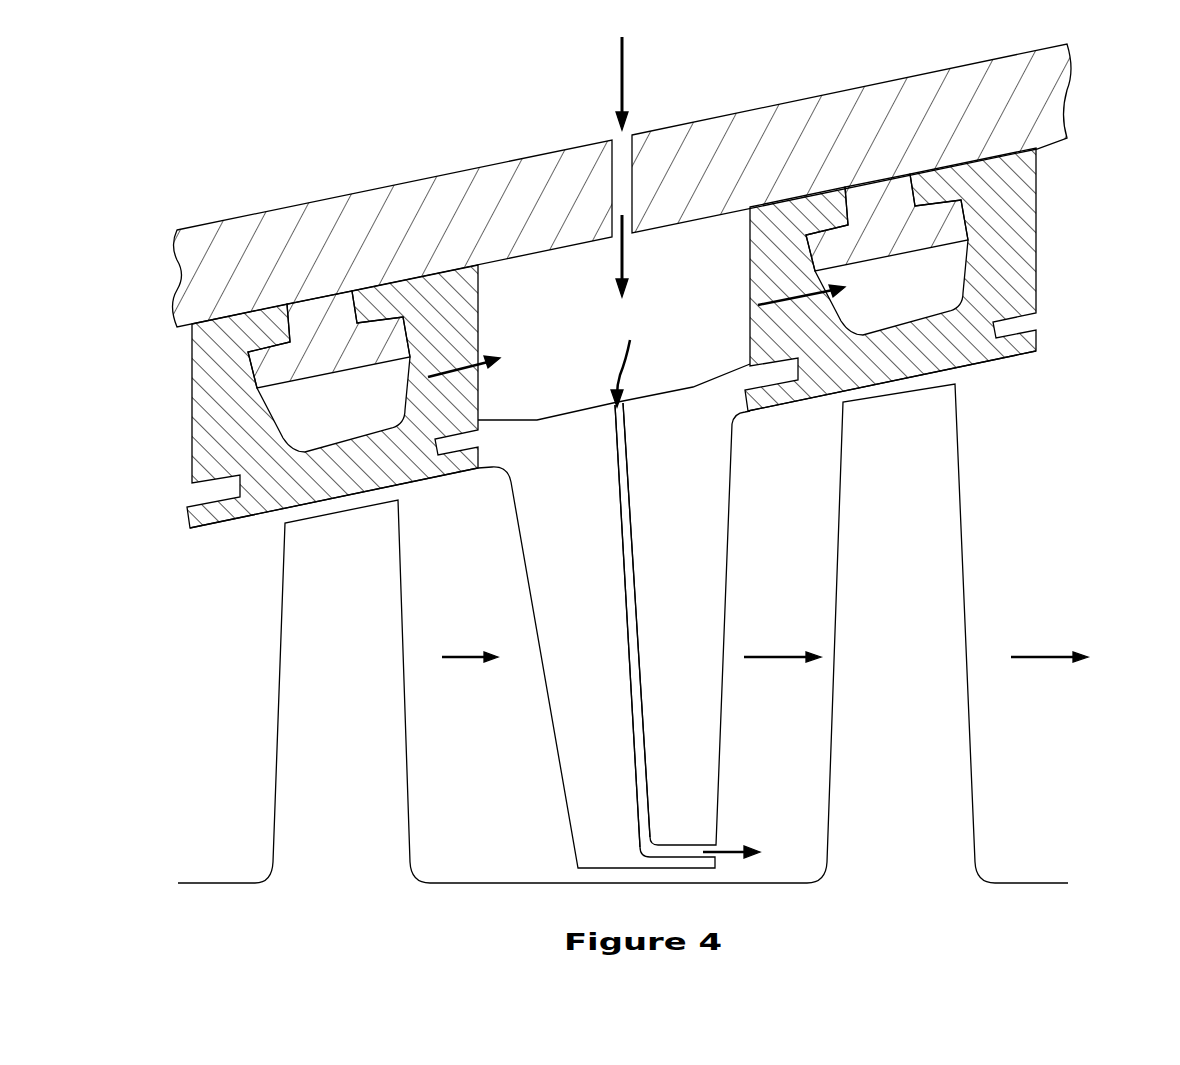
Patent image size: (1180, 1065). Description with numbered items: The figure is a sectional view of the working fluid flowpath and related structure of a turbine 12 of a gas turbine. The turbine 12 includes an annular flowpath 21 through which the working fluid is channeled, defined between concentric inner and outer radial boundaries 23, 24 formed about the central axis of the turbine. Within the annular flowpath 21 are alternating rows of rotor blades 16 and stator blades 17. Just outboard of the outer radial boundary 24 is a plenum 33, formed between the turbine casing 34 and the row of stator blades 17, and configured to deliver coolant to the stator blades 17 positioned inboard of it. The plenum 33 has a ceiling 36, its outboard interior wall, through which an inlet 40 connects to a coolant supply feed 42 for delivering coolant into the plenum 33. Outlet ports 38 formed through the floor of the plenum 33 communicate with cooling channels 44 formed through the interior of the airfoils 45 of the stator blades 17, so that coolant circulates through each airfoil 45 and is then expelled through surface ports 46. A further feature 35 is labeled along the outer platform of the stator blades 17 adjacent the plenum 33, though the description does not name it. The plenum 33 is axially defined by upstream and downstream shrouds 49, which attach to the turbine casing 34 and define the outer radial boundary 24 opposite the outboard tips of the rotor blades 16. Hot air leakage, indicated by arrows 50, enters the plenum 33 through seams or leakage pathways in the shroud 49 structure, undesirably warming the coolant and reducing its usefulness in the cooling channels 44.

The turbine 12 is at (1112, 120).
The rotor blades 16 is at (325, 648).
The stator blades 17 is at (565, 648).
The annular flowpath 21 is at (215, 710).
The inner radial boundary 23 is at (480, 883).
The outer radial boundary 24 is at (437, 480).
The plenum 33 is at (568, 275).
The turbine casing 34 is at (290, 251).
The vane outer platform 35 is at (538, 420).
The ceiling 36 is at (541, 300).
The outlet ports 38 is at (613, 400).
The inlet 40 is at (633, 235).
The coolant supply feed 42 is at (624, 147).
The cooling channels 44 is at (624, 478).
The airfoils 45 is at (742, 578).
The surface ports 46 is at (722, 848).
The shrouds 49 is at (208, 425).
The hot air leakage arrows 50 is at (470, 368).